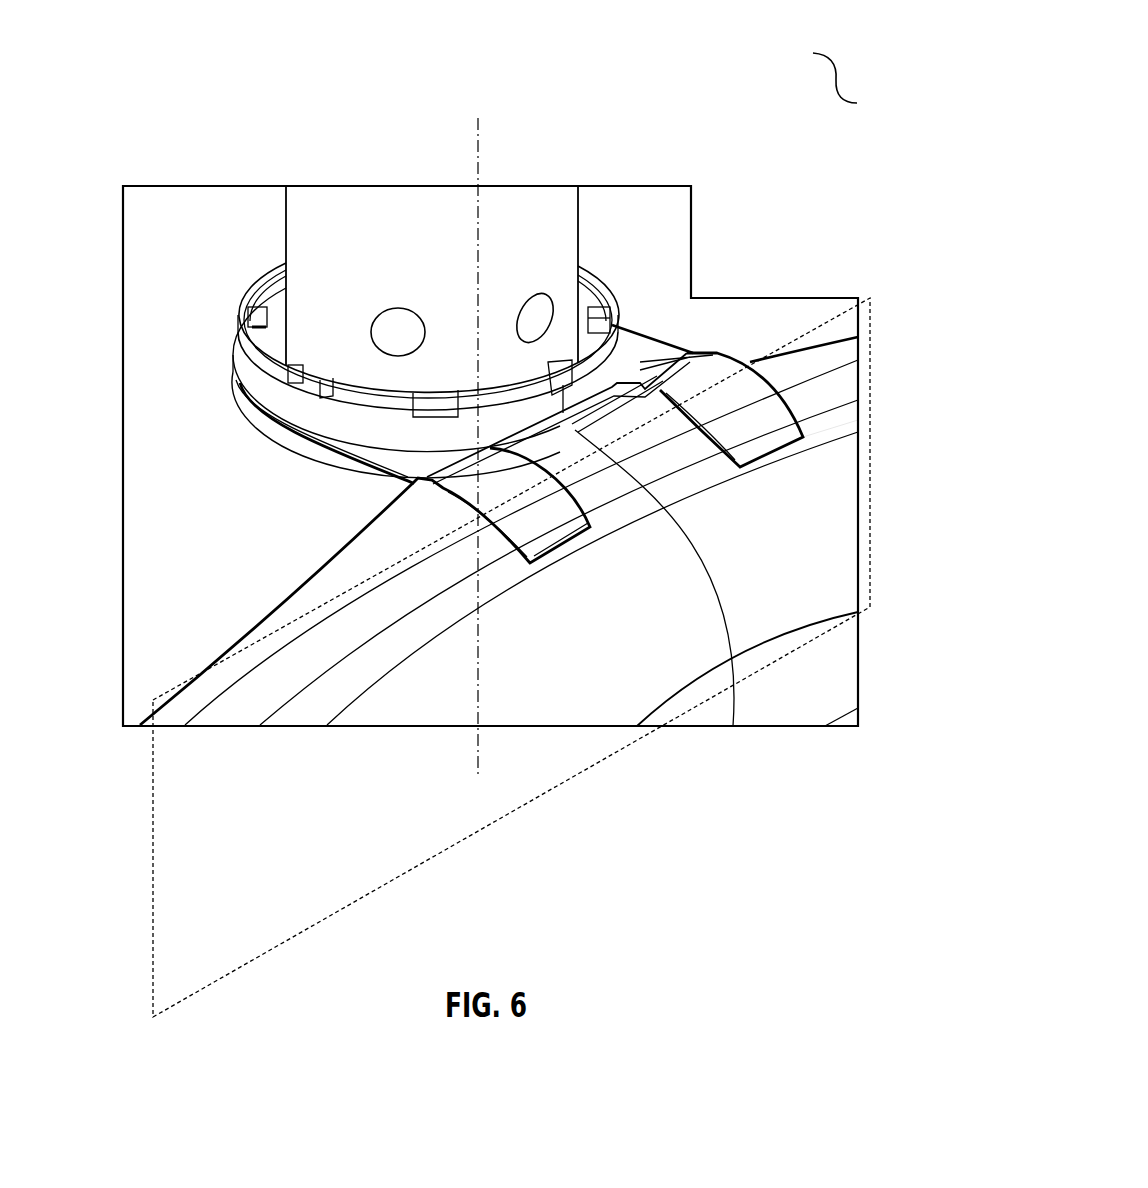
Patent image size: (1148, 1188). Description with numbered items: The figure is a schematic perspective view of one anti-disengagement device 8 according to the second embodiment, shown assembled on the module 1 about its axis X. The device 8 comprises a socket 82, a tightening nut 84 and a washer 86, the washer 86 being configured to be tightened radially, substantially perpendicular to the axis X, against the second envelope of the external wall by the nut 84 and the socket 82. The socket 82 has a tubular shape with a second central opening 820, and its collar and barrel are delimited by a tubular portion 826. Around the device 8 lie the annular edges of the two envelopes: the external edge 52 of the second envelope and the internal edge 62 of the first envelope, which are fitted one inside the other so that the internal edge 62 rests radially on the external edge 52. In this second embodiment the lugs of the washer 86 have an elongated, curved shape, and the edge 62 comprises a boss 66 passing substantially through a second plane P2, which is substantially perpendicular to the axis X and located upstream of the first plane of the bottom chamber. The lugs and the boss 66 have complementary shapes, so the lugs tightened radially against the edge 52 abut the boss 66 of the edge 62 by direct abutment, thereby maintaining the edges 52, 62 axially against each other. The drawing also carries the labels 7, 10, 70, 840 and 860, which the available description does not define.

The module 1 is at (752, 123).
The fuel system 10 is at (853, 56).
The tube 7 is at (390, 210).
The anti-disengagement device 8 is at (596, 355).
The second central opening 820 is at (591, 295).
The fastening clip 840 is at (430, 386).
The fastening clip 860 is at (615, 327).
The collar 70 is at (312, 241).
The socket 82 is at (250, 325).
The tightening nut 84 is at (290, 395).
The washer 86 is at (400, 452).
The external annular edge 52 is at (188, 620).
The internal annular edge 62 is at (232, 700).
The boss 66 is at (807, 390).
The tubular portion 826 is at (540, 513).
The axis X is at (508, 440).
The second plane P2 is at (152, 770).